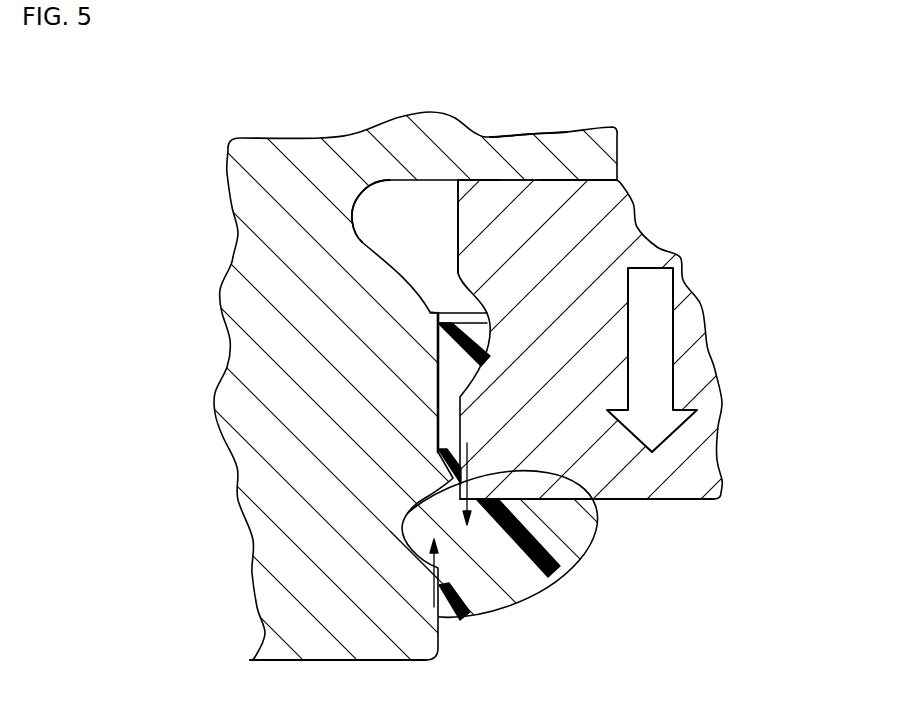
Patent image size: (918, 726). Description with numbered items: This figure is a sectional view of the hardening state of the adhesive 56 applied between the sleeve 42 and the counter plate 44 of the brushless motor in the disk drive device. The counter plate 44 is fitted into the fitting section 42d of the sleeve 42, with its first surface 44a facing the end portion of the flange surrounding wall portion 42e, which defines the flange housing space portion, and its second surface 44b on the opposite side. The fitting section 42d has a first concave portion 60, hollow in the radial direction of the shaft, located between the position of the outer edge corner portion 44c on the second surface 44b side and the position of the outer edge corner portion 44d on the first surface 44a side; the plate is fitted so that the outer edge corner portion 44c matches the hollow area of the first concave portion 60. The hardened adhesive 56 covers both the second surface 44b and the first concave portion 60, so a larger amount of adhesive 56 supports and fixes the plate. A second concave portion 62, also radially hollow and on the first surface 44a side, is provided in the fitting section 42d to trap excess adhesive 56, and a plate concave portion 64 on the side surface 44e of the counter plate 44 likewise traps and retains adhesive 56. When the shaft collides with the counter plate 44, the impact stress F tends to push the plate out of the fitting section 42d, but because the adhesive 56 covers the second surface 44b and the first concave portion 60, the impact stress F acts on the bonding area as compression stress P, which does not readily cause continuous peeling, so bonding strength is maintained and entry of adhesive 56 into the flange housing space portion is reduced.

The sleeve 42 is at (427, 150).
The fitting section 42d is at (440, 408).
The flange surrounding wall portion 42e is at (533, 148).
The counter plate 44 is at (610, 228).
The first surface 44a is at (565, 180).
The second surface 44b is at (690, 499).
The outer edge corner portion 44c is at (315, 657).
The outer edge corner portion 44d is at (458, 180).
The side surface 44e is at (458, 218).
The adhesive 56 is at (513, 558).
The first concave portion 60 is at (410, 483).
The second concave portion 62 is at (360, 192).
The plate concave portion 64 is at (430, 312).
The compression stress P is at (438, 592).
The impact stress F is at (683, 352).